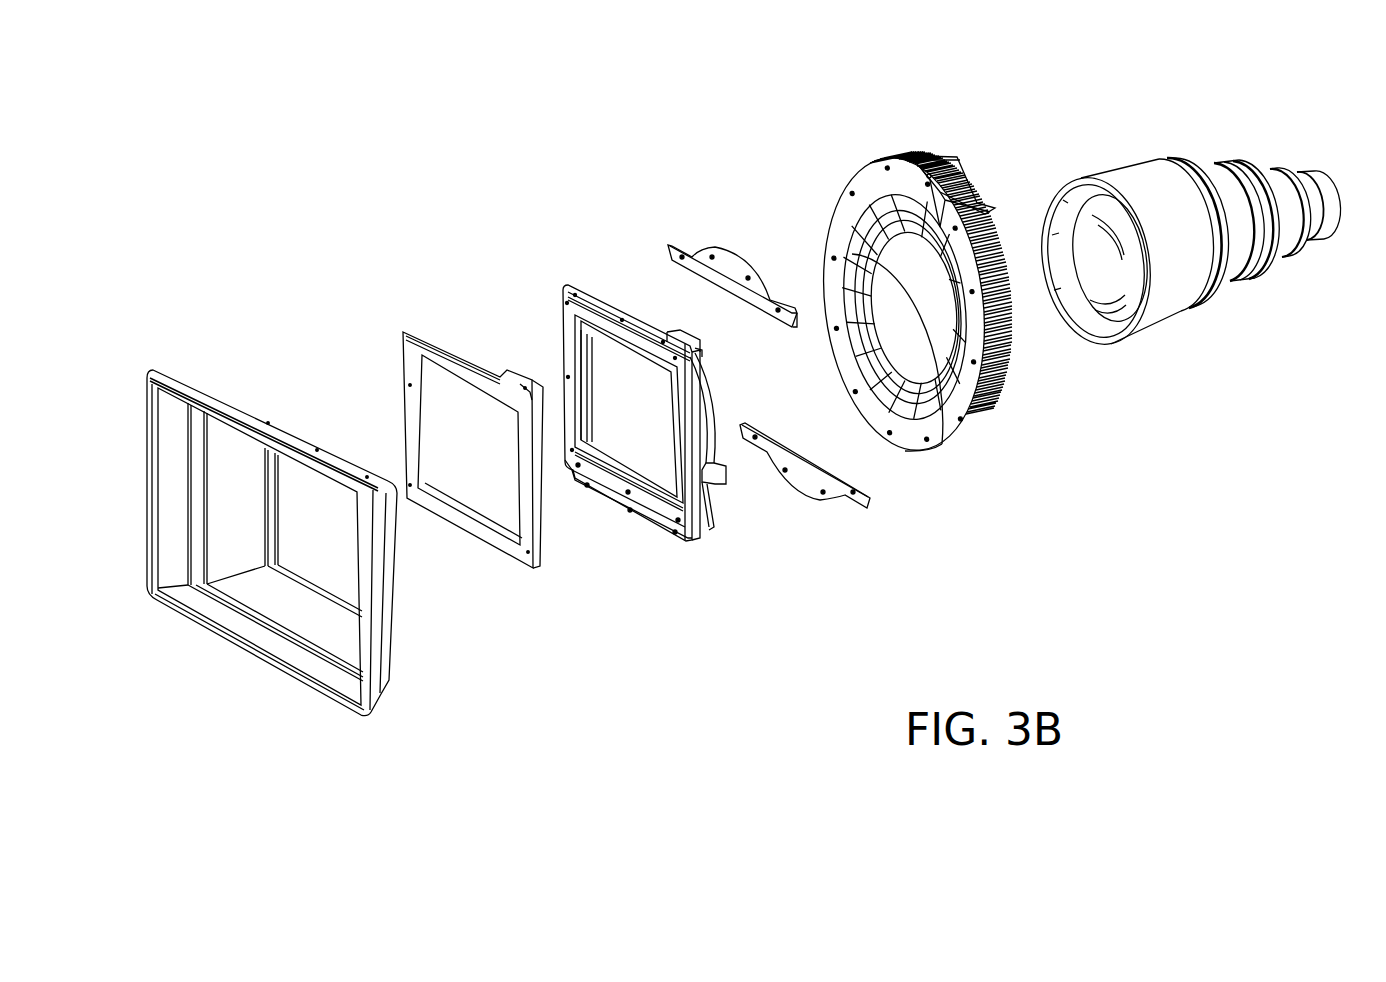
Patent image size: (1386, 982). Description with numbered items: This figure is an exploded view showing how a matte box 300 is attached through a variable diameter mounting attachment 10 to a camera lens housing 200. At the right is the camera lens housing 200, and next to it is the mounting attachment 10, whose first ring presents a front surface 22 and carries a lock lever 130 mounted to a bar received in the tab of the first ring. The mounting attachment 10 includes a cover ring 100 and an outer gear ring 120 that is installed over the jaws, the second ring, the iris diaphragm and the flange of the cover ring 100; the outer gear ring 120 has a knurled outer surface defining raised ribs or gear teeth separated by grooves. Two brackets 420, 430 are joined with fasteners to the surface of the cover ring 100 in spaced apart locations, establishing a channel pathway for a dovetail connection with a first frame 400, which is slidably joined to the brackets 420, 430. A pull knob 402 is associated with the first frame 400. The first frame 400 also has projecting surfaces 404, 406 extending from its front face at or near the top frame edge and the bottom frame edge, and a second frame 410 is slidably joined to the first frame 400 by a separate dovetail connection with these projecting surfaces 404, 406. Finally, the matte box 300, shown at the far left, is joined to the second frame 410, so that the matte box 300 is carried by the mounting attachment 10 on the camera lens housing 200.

The variable diameter mounting attachment 10 is at (942, 287).
The front surface 22 is at (1005, 395).
The cover ring 100 is at (927, 440).
The outer gear ring 120 is at (964, 336).
The lock lever 130 is at (955, 192).
The camera lens housing 200 is at (1165, 177).
The matte box 300 is at (255, 420).
The first frame 400 is at (624, 403).
The pull knob 402 is at (727, 478).
The projecting surface 404 is at (562, 297).
The projecting surface 406 is at (685, 540).
The second frame 410 is at (410, 330).
The bracket 420 is at (725, 245).
The bracket 430 is at (823, 500).